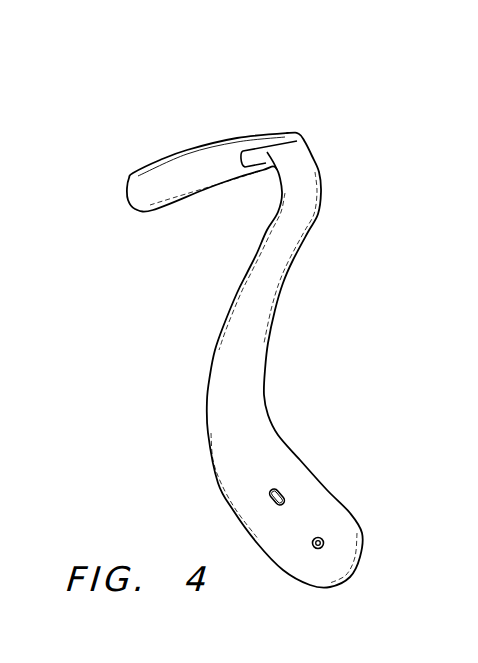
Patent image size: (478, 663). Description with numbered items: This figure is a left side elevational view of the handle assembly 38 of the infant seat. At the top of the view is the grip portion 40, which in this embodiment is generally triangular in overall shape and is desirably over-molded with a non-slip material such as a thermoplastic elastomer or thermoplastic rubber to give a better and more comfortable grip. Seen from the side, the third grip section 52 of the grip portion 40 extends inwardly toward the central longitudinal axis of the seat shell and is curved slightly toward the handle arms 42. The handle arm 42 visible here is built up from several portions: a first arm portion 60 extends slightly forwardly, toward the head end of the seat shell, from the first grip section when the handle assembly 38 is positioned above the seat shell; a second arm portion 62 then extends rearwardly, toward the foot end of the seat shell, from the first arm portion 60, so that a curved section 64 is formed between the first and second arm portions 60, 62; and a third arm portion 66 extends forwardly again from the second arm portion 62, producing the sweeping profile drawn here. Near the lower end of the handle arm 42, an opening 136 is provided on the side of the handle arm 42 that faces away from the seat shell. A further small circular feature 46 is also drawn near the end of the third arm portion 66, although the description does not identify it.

The handle assembly 38 is at (310, 93).
The grip portion 40 is at (193, 140).
The handle arm 42 is at (367, 228).
The light aperture 46 is at (320, 537).
The third grip section 52 is at (187, 180).
The first arm portion 60 is at (307, 167).
The second arm portion 62 is at (280, 283).
The curved section 64 is at (292, 208).
The third arm portion 66 is at (268, 443).
The opening 136 is at (280, 487).